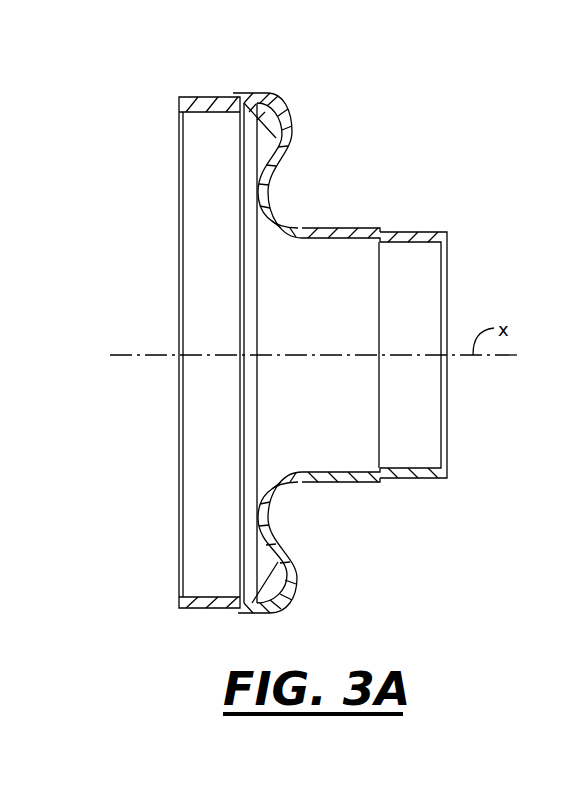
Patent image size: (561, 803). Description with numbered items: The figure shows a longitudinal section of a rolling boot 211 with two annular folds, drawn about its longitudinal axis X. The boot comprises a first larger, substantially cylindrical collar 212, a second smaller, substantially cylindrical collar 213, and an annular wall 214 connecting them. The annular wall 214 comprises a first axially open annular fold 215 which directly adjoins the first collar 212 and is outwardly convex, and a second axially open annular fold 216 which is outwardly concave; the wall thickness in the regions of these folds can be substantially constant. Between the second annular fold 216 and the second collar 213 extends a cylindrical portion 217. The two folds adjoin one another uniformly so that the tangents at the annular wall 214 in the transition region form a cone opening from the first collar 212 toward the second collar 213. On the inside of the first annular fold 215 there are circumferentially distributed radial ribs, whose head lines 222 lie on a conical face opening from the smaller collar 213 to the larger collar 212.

The rolling boot 211 is at (292, 342).
The first collar 212 is at (204, 611).
The second collar 213 is at (422, 478).
The annular wall 214 is at (320, 334).
The first annular fold 215 is at (280, 97).
The second annular fold 216 is at (283, 222).
The cylindrical portion 217 is at (364, 227).
The head lines 222 is at (253, 110).